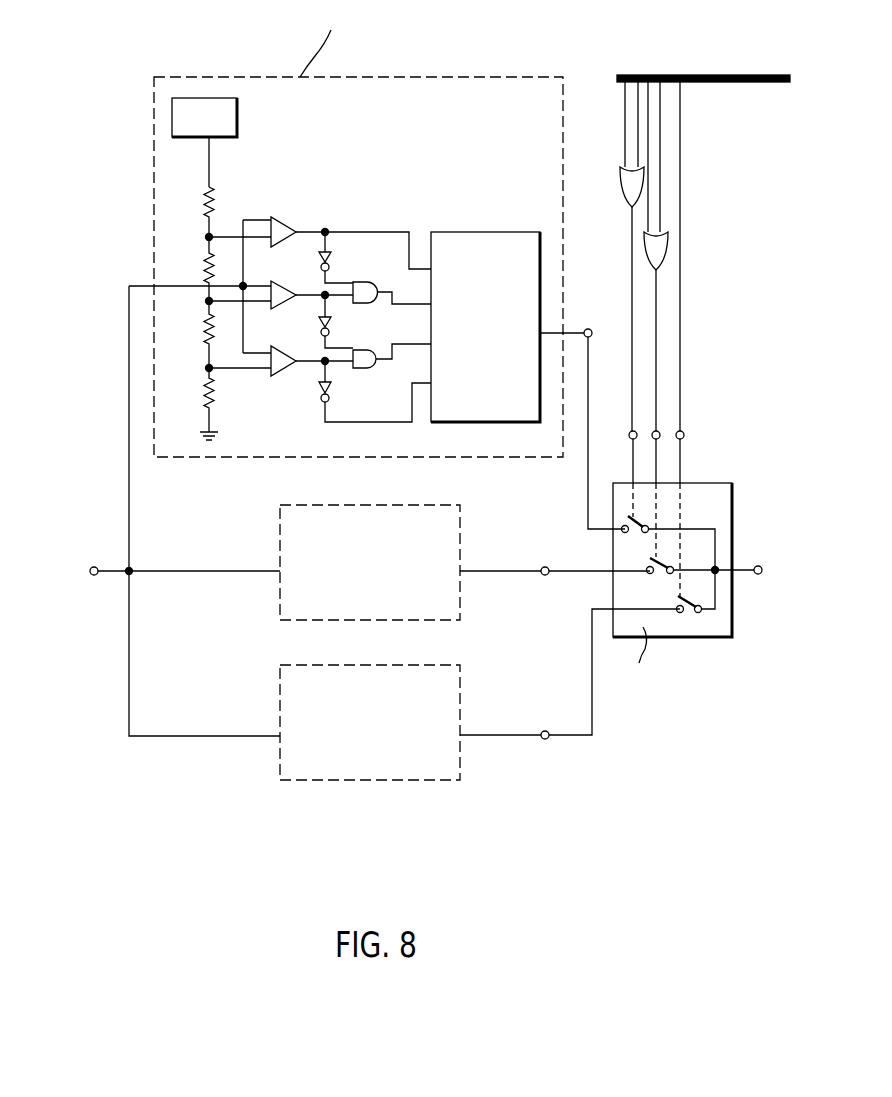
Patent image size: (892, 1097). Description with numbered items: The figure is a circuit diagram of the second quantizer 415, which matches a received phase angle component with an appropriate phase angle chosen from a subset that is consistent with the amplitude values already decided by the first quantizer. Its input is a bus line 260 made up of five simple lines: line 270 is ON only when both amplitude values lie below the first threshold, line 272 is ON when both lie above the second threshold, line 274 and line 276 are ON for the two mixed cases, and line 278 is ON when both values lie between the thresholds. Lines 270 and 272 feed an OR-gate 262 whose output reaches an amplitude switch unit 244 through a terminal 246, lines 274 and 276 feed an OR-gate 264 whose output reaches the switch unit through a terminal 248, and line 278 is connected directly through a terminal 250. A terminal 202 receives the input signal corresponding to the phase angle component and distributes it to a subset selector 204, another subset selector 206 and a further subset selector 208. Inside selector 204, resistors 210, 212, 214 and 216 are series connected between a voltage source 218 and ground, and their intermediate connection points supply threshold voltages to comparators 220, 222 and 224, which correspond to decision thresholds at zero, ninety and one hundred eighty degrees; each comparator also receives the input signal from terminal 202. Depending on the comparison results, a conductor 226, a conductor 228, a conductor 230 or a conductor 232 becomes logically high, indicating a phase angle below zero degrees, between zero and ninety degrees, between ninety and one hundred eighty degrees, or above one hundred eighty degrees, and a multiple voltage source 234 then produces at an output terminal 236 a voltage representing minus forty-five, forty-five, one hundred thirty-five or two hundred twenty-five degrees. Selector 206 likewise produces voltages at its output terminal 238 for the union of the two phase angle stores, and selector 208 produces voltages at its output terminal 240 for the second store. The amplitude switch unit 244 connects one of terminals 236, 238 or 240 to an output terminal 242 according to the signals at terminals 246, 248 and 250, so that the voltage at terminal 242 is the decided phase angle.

The terminal 202 is at (95, 567).
The subset selector 204 is at (154, 208).
The subset selector 206 is at (280, 544).
The subset selector 208 is at (280, 704).
The resistor 210 is at (215, 202).
The resistor 212 is at (205, 268).
The resistor 214 is at (205, 326).
The resistor 216 is at (205, 402).
The voltage source 218 is at (236, 126).
The comparator 220 is at (282, 370).
The comparator 222 is at (282, 302).
The comparator 224 is at (280, 226).
The conductor 226 is at (397, 428).
The conductor 228 is at (411, 343).
The conductor 230 is at (388, 283).
The conductor 232 is at (352, 230).
The multiple voltage source 234 is at (474, 248).
The output terminal 236 is at (589, 328).
The output terminal 238 is at (543, 567).
The output terminal 240 is at (544, 731).
The output terminal 242 is at (760, 566).
The amplitude switch unit 244 is at (722, 512).
The terminal 246 is at (629, 434).
The terminal 248 is at (659, 432).
The terminal 250 is at (688, 434).
The bus line 260 is at (747, 75).
The OR-gate 262 is at (626, 183).
The OR-gate 264 is at (651, 249).
The simple line 270 is at (624, 107).
The simple line 272 is at (638, 119).
The simple line 274 is at (648, 126).
The simple line 276 is at (660, 146).
The simple line 278 is at (680, 176).
The second quantizer 415 is at (155, 775).